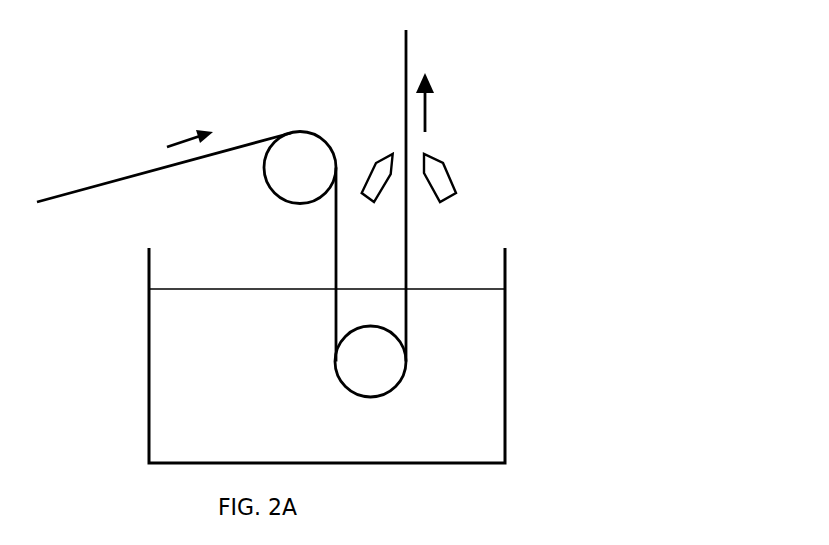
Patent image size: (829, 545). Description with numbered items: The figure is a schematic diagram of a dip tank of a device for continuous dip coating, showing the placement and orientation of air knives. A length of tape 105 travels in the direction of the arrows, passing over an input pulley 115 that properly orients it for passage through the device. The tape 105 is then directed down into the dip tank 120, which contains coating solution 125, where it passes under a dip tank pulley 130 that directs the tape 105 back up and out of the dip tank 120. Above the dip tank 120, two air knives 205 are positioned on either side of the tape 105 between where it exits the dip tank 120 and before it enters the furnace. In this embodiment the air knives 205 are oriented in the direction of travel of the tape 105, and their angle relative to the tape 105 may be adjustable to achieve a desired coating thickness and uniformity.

The tape 105 is at (120, 178).
The input pulley 115 is at (302, 162).
The dip tank 120 is at (505, 345).
The coating solution 125 is at (461, 318).
The dip tank pulley 130 is at (363, 377).
The air knife 205 is at (377, 166).